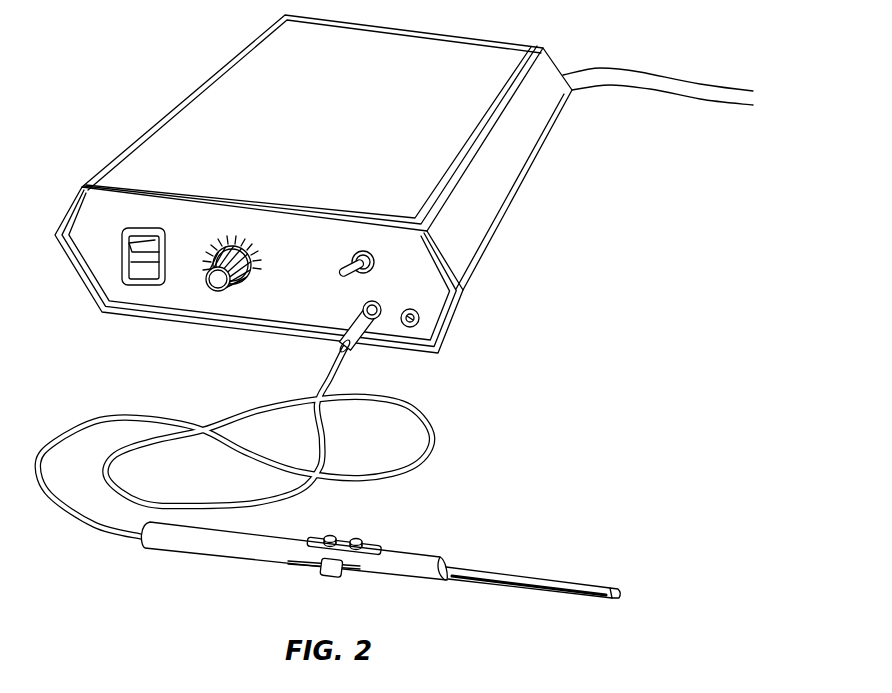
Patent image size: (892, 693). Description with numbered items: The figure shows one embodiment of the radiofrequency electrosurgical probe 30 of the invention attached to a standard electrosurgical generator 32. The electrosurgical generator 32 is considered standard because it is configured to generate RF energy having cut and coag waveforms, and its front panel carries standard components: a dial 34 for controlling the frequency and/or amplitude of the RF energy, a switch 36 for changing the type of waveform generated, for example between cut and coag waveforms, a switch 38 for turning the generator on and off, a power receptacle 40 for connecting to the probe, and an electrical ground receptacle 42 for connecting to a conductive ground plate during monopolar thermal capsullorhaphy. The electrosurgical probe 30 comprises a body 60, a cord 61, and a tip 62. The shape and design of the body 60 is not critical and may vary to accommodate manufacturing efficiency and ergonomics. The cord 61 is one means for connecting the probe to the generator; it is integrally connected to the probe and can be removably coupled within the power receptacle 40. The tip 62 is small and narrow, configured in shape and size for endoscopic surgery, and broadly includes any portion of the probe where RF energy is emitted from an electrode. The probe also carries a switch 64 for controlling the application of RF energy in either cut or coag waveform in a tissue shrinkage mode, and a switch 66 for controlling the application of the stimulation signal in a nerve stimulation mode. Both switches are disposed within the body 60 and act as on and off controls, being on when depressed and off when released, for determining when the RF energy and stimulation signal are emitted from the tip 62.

The electrosurgical probe 30 is at (500, 553).
The electrosurgical generator 32 is at (157, 88).
The dial 34 is at (219, 243).
The switch 36 is at (352, 252).
The switch 38 is at (138, 268).
The power receptacle 40 is at (380, 318).
The electrical ground receptacle 42 is at (422, 318).
The body 60 is at (212, 550).
The cord 61 is at (428, 463).
The tip 62 is at (624, 593).
The switch 64 is at (332, 539).
The switch 66 is at (358, 541).